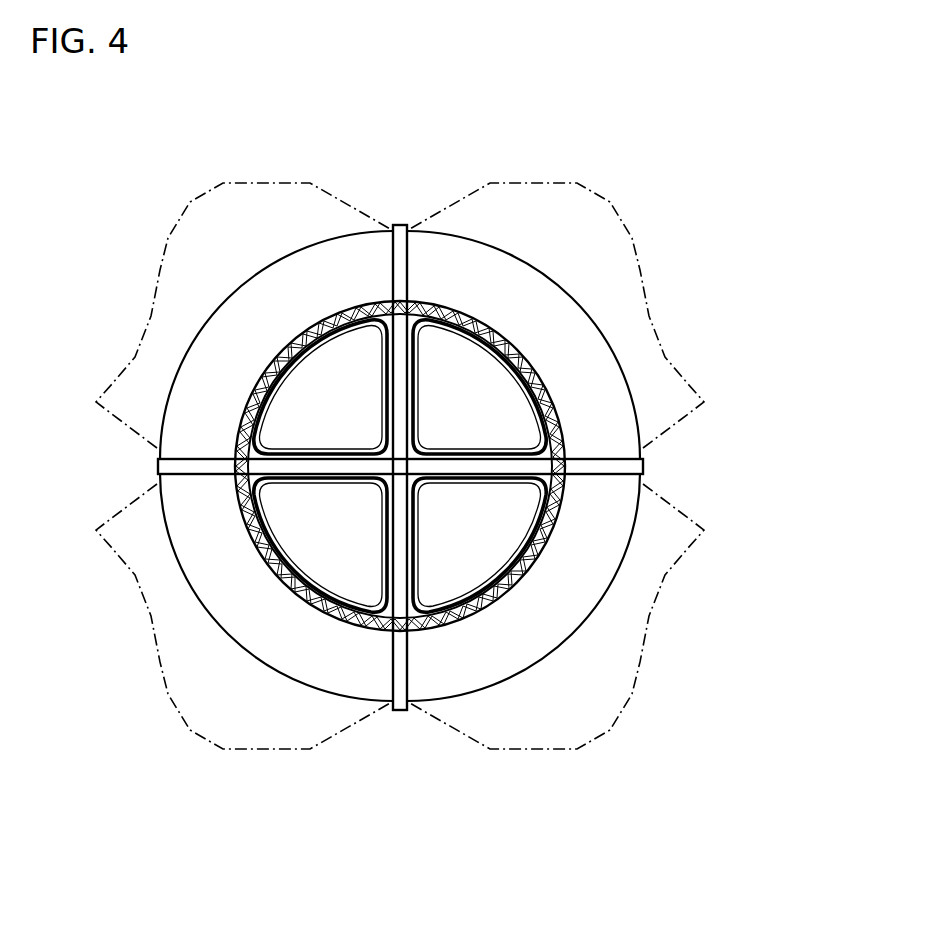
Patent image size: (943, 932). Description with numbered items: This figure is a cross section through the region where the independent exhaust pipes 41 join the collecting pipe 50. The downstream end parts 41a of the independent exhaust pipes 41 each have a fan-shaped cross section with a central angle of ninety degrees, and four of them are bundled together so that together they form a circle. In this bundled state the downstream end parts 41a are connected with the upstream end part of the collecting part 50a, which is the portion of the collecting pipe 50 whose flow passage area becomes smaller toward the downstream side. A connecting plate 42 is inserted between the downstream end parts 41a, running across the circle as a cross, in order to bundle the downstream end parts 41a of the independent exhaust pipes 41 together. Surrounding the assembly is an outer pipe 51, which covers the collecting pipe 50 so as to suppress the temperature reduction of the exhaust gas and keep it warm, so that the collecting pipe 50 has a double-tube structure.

The independent exhaust pipe 41 is at (257, 313).
The downstream end part 41a is at (490, 543).
The connecting plate 42 is at (645, 463).
The collecting pipe 50 is at (400, 466).
The collecting part 50a is at (550, 537).
The outer pipe 51 is at (250, 533).